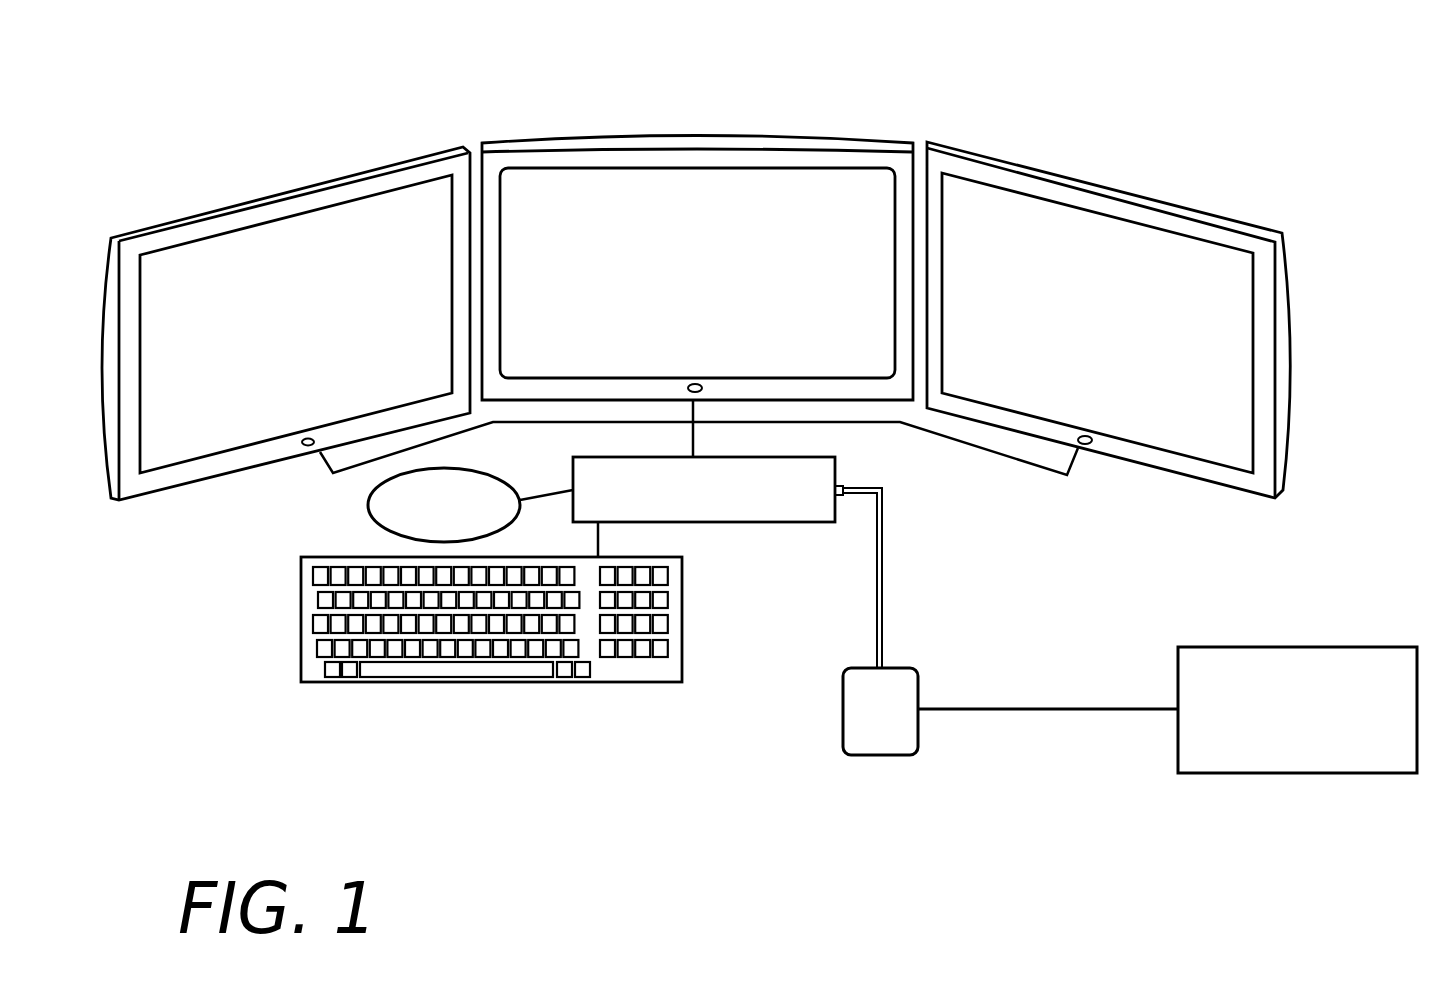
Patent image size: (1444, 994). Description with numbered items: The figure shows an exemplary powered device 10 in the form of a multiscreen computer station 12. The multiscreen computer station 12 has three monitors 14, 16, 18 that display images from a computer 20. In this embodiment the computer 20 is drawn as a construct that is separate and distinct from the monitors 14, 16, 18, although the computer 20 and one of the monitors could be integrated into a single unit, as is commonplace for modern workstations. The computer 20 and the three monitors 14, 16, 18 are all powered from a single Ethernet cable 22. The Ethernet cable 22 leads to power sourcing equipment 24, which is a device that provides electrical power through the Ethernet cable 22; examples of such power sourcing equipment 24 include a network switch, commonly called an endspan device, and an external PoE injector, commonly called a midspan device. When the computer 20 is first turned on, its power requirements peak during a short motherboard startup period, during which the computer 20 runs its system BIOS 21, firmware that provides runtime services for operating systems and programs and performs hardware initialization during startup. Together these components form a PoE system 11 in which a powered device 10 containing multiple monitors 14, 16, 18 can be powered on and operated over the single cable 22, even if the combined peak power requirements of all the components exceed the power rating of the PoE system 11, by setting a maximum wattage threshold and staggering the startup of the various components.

The powered device 10 is at (295, 80).
The PoE system 11 is at (1220, 789).
The multiscreen computer station 12 is at (235, 197).
The monitor 14 is at (760, 187).
The monitor 16 is at (392, 208).
The monitor 18 is at (1053, 230).
The computer 20 is at (720, 522).
The system BIOS 21 is at (368, 502).
The Ethernet cable 22 is at (880, 572).
The power sourcing equipment 24 is at (907, 695).